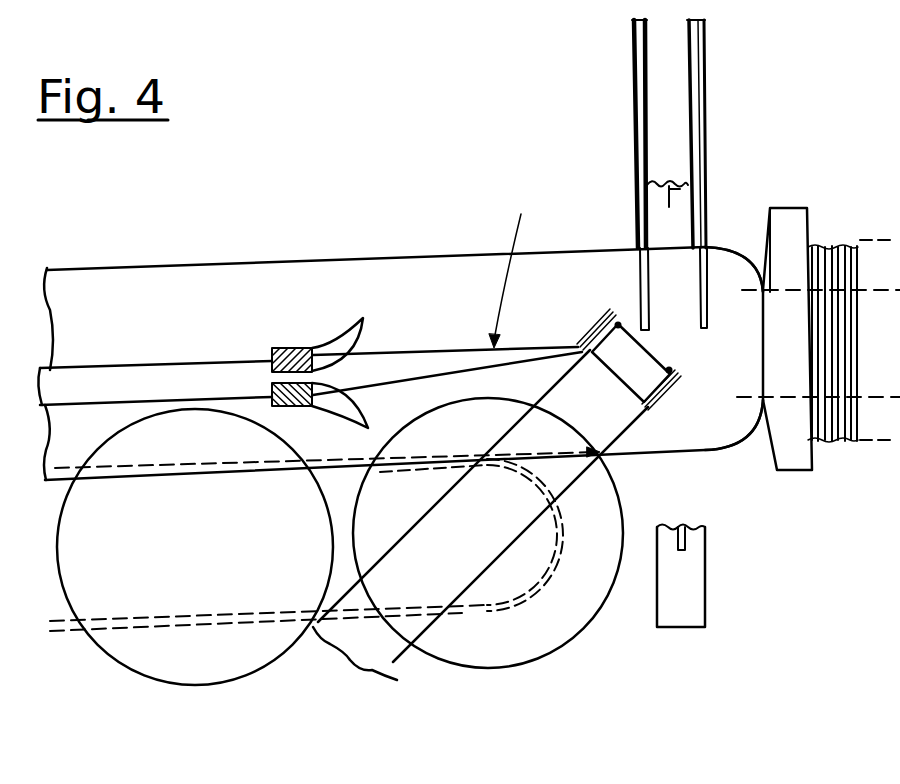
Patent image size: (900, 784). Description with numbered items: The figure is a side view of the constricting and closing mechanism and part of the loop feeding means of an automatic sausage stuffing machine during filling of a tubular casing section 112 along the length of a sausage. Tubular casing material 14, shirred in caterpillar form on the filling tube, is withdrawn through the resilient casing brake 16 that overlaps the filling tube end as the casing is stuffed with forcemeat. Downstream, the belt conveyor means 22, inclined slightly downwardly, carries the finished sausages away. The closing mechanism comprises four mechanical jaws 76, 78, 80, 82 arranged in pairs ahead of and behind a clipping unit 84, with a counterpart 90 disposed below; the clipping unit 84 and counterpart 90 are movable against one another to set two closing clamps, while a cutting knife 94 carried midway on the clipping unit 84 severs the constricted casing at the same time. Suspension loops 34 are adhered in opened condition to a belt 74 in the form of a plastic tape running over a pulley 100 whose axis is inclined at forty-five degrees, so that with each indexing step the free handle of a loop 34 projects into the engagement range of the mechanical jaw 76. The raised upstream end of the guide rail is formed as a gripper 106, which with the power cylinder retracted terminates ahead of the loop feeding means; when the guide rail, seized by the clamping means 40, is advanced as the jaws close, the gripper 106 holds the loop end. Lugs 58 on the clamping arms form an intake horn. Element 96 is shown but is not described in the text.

The tubular casing material 14 is at (835, 247).
The casing brake 16 is at (789, 211).
The belt conveyor means 22 is at (555, 598).
The suspension loop 34 is at (680, 359).
The clamping means 40 is at (288, 338).
The lugs 58 is at (337, 347).
The belt 74 is at (602, 430).
The mechanical jaw 76 is at (637, 170).
The mechanical jaw 78 is at (645, 194).
The mechanical jaw 80 is at (703, 205).
The mechanical jaw 82 is at (693, 217).
The clipping unit 84 is at (680, 120).
The counterpart 90 is at (695, 601).
The cutting knife 94 is at (690, 186).
The slot 96 is at (685, 523).
The pulley 100 is at (700, 413).
The gripper 106 is at (516, 267).
The stuffed casing section 112 is at (380, 258).